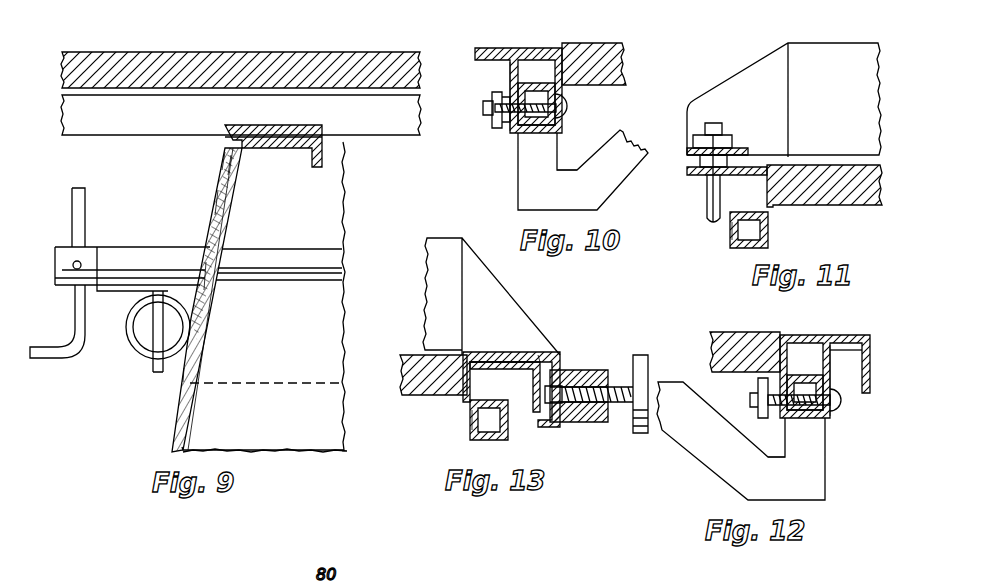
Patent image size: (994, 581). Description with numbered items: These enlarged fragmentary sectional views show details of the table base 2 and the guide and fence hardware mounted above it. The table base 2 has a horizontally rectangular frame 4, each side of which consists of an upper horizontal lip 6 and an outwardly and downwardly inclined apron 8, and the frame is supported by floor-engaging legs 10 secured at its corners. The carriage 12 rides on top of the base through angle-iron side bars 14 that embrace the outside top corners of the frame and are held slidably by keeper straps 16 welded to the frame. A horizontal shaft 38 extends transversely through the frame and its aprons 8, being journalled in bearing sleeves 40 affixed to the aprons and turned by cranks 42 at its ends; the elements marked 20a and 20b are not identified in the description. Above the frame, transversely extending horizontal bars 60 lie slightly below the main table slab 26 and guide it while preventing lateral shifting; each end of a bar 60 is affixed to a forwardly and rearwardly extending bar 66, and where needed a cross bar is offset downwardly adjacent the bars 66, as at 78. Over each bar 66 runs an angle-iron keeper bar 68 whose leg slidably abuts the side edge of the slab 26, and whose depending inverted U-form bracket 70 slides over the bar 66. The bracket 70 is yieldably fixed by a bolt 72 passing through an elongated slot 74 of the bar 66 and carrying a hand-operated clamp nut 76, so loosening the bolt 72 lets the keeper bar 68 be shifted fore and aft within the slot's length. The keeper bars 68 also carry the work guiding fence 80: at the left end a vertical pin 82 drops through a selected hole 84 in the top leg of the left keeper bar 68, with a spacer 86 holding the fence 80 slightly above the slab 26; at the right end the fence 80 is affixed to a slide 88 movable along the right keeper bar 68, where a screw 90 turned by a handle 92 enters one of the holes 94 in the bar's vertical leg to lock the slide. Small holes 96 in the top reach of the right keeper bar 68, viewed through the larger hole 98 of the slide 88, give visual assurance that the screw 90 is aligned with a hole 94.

In FIG. 9, the table base 2 is at (166, 440).
In FIG. 9, the horizontally rectangular frame 4 is at (180, 380).
In FIG. 9, the upper horizontal lip 6 is at (282, 150).
In FIG. 9, the outwardly and downwardly inclined apron 8 is at (202, 288).
In FIG. 9, the floor-engaging leg 10 is at (328, 445).
In FIG. 9, the carriage 12 is at (224, 176).
In FIG. 9, the angle-iron side bar 14 is at (226, 153).
In FIG. 9, the keeper strap 16 is at (213, 200).
In FIG. 9, the ring coupling 20a is at (134, 338).
In FIG. 9, the coupling bar 20b is at (155, 373).
In FIG. 9, the main table slab 26 is at (356, 52).
In FIG. 10, the main table slab 26 is at (600, 47).
In FIG. 11, the main table slab 26 is at (845, 207).
In FIG. 13, the main table slab 26 is at (412, 396).
In FIG. 12, the main table slab 26 is at (725, 335).
In FIG. 9, the horizontal shaft 38 is at (289, 282).
In FIG. 9, the bearing sleeve 40 is at (128, 250).
In FIG. 9, the crank 42 is at (46, 359).
In FIG. 9, the horizontal bar 60 is at (130, 136).
In FIG. 10, the horizontal bar 60 is at (518, 190).
In FIG. 12, the horizontal bar 60 is at (826, 476).
In FIG. 10, the horizontal bar 66 is at (526, 131).
In FIG. 11, the horizontal bar 66 is at (745, 250).
In FIG. 13, the horizontal bar 66 is at (480, 438).
In FIG. 12, the horizontal bar 66 is at (816, 420).
In FIG. 10, the keeper bar 68 is at (531, 48).
In FIG. 11, the keeper bar 68 is at (690, 173).
In FIG. 13, the keeper bar 68 is at (512, 370).
In FIG. 12, the keeper bar 68 is at (826, 335).
In FIG. 10, the depending bracket 70 is at (509, 76).
In FIG. 12, the depending bracket 70 is at (831, 366).
In FIG. 10, the bolt 72 is at (484, 109).
In FIG. 12, the bolt 72 is at (842, 402).
In FIG. 10, the longitudinally elongated slot 74 is at (560, 105).
In FIG. 11, the longitudinally elongated slot 74 is at (730, 235).
In FIG. 13, the longitudinally elongated slot 74 is at (470, 424).
In FIG. 12, the longitudinally elongated slot 74 is at (797, 419).
In FIG. 10, the hand-operated clamp nut 76 is at (495, 128).
In FIG. 12, the hand-operated clamp nut 76 is at (758, 386).
In FIG. 10, the downward offset 78 is at (576, 170).
In FIG. 12, the downward offset 78 is at (770, 458).
In FIG. 11, the work guiding fence 80 is at (845, 55).
In FIG. 13, the work guiding fence 80 is at (432, 306).
In FIG. 11, the vertical pin 82 is at (708, 210).
In FIG. 11, the hole 84 is at (706, 178).
In FIG. 11, the spacer 86 is at (700, 161).
In FIG. 13, the slide 88 is at (493, 352).
In FIG. 13, the screw 90 is at (620, 404).
In FIG. 13, the handle 92 is at (641, 434).
In FIG. 13, the hole 94 is at (548, 400).
In FIG. 13, the small hole 96 is at (534, 372).
In FIG. 13, the larger hole 98 is at (540, 356).